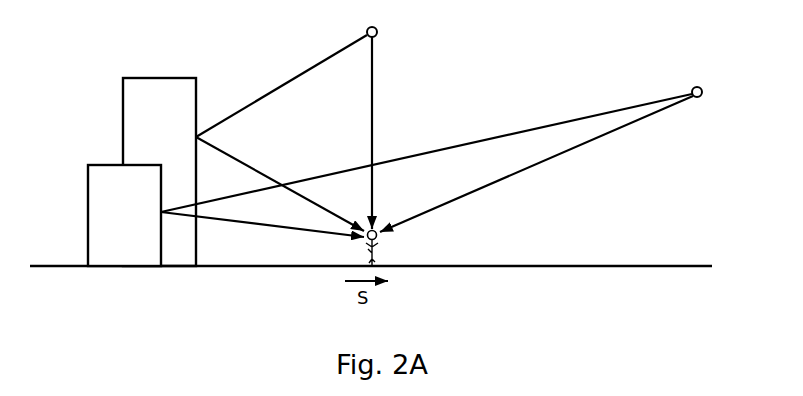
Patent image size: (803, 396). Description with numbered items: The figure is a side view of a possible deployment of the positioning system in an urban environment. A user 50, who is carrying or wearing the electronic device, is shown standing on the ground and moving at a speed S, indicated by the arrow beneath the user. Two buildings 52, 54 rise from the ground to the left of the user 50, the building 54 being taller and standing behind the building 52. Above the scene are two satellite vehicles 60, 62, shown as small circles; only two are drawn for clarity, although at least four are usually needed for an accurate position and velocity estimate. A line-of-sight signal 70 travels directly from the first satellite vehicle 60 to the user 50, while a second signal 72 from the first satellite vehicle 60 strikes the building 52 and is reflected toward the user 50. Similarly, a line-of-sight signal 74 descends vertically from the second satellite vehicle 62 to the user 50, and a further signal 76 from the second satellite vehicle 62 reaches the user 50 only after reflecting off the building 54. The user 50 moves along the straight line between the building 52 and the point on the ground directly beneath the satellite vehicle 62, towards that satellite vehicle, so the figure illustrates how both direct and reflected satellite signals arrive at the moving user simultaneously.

The user 50 is at (378, 252).
The building 52 is at (88, 182).
The building 54 is at (123, 108).
The first satellite vehicle 60 is at (705, 93).
The second satellite vehicle 62 is at (380, 30).
The line-of-sight signal 70 is at (540, 163).
The signal 72 is at (262, 225).
The line-of-sight signal 74 is at (375, 82).
The signal 76 is at (240, 162).